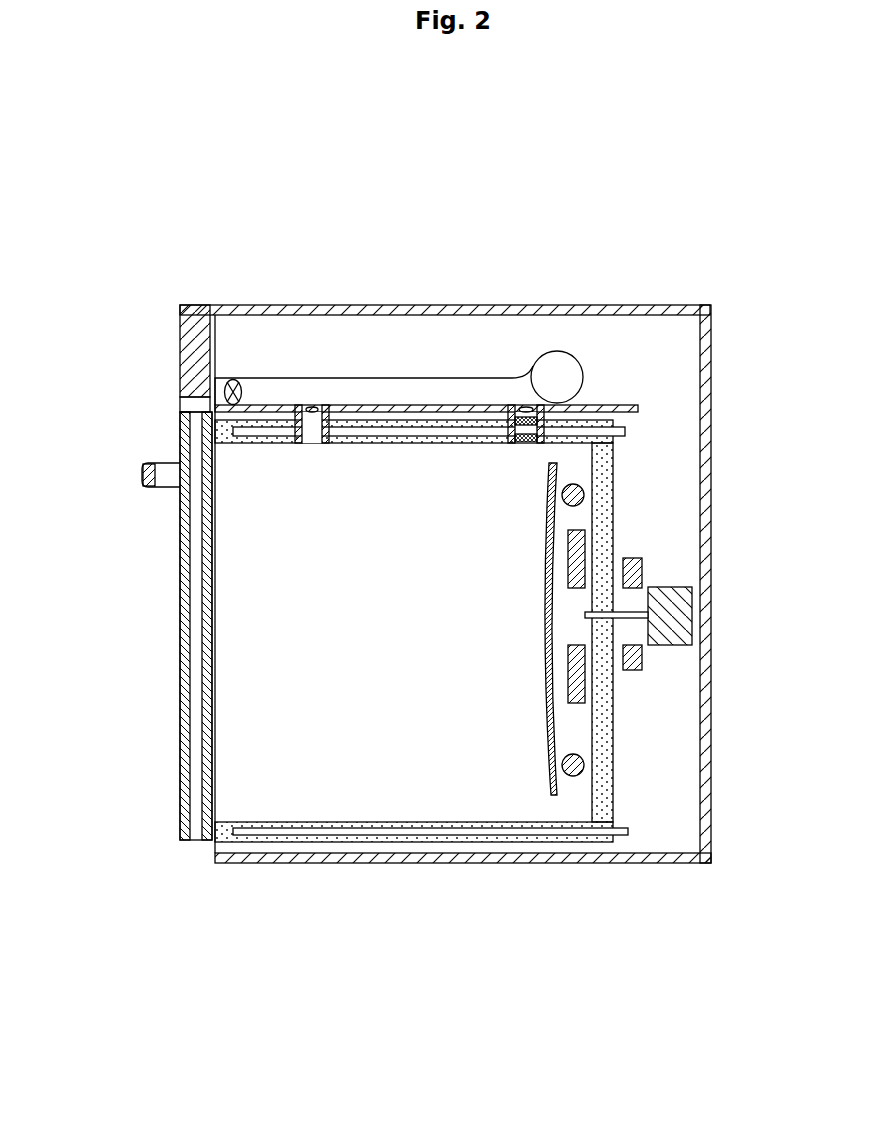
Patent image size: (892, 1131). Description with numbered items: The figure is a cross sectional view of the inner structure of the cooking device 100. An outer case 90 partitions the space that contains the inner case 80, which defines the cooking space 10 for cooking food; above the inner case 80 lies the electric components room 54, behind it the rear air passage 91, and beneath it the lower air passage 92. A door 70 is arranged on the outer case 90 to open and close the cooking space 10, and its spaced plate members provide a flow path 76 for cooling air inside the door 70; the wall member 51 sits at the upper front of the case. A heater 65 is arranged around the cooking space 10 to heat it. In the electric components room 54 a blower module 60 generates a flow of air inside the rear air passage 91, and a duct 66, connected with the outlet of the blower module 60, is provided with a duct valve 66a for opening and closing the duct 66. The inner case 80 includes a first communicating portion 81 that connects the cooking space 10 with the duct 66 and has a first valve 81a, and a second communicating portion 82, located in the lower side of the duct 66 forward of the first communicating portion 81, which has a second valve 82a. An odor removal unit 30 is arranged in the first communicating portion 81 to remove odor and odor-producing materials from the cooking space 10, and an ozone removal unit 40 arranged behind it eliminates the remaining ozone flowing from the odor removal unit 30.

The cooking device 100 is at (140, 230).
The outer case 90 is at (602, 310).
The rear air passage 91 is at (672, 486).
The lower air passage 92 is at (353, 853).
The door frame upper member 51 is at (185, 353).
The door 70 is at (133, 623).
The flow path 76 is at (197, 422).
The electric components room 54 is at (320, 330).
The duct 66 is at (374, 313).
The duct valve 66a is at (224, 381).
The blower module 60 is at (547, 368).
The ozone removal unit 40 is at (543, 420).
The inner case 80 is at (548, 848).
The second communicating portion 82 is at (292, 414).
The second valve 82a is at (311, 405).
The first communicating portion 81 is at (630, 419).
The first valve 81a is at (518, 404).
The odor removal unit 30 is at (527, 444).
The cooking space 10 is at (391, 619).
The heater 65 is at (606, 537).